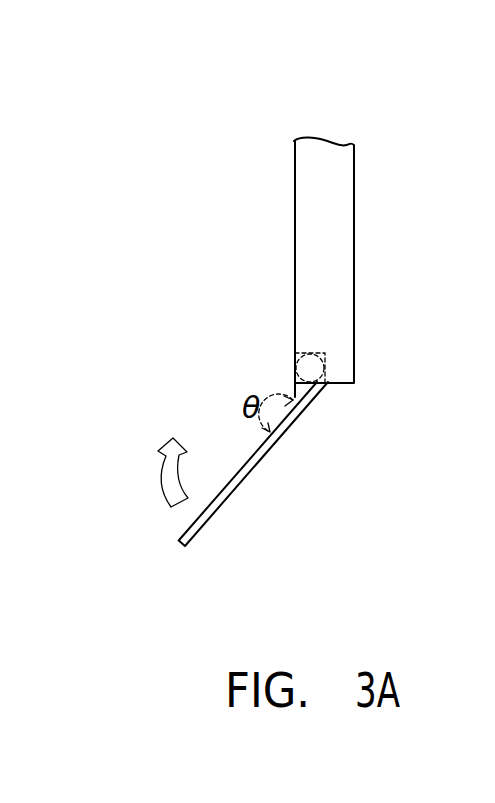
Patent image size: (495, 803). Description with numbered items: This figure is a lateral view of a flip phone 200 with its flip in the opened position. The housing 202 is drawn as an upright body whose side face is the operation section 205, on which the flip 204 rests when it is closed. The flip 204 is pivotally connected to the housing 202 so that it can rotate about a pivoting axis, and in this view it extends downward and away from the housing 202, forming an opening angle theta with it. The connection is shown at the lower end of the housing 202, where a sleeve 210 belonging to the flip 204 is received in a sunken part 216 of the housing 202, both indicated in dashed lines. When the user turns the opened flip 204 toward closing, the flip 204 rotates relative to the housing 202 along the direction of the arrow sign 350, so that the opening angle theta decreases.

The electronic device 200 is at (422, 72).
The housing 202 is at (342, 173).
The flip 204 is at (245, 478).
The operation section 205 is at (294, 186).
The sleeve 210 is at (310, 367).
The sunken part 216 is at (328, 366).
The arrow sign 350 is at (165, 462).